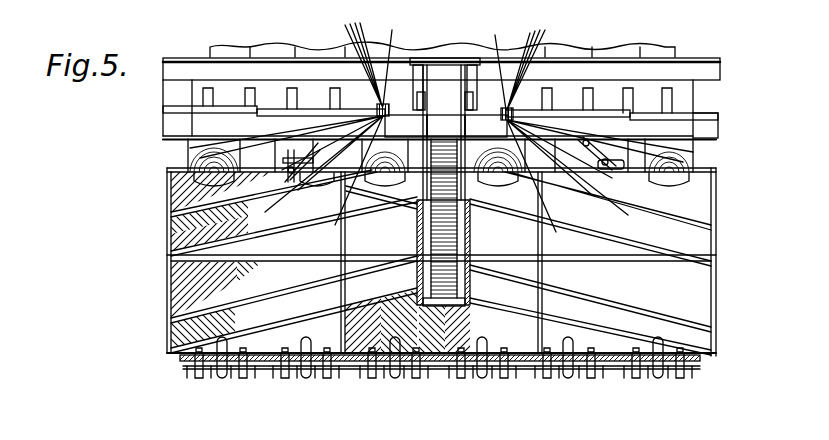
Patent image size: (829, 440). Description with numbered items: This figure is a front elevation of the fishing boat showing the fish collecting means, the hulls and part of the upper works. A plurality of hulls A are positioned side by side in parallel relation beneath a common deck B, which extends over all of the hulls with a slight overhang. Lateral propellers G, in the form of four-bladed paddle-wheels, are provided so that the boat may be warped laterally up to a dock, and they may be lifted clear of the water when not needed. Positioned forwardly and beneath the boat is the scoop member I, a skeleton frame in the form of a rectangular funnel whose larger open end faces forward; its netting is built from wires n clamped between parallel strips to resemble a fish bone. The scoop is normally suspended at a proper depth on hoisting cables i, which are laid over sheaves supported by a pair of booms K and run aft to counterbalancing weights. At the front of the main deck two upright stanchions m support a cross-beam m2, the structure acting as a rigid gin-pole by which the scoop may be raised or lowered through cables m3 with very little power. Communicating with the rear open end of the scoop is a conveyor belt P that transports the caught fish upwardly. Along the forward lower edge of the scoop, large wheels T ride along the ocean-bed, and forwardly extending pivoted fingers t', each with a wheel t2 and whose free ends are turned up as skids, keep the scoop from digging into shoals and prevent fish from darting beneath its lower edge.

The hoisting cables i is at (445, 60).
The cross-beam m2 is at (443, 62).
The upright stanchions m is at (445, 105).
The booms K is at (441, 173).
The cables m3 is at (464, 127).
The hulls A is at (192, 150).
The deck B is at (695, 160).
The lateral propellers G is at (272, 172).
The scoop member I is at (718, 290).
The wires n is at (176, 302).
The conveyor belt P is at (470, 288).
The pivoted fingers t' is at (439, 376).
The wheel t2 is at (199, 380).
The wheels T is at (656, 405).